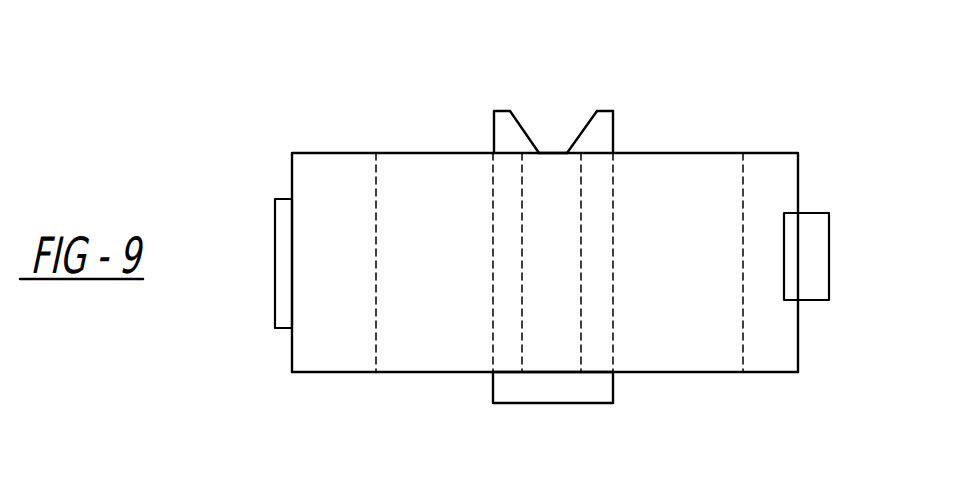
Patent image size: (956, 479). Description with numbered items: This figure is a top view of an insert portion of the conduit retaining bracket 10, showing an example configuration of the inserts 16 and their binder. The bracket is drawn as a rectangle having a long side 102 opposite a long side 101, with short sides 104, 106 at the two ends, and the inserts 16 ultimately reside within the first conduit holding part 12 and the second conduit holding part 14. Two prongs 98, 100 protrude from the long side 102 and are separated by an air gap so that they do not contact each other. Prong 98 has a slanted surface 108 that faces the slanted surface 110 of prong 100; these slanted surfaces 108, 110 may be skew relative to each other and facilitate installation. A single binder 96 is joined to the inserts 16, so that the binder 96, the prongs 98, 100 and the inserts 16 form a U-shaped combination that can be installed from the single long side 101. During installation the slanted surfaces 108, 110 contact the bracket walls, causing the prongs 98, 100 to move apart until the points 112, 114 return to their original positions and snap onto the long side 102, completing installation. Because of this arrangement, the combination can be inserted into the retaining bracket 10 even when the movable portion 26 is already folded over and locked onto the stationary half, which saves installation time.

The retaining bracket 10 is at (226, 148).
The first conduit holding part 12 is at (418, 347).
The second conduit holding part 14 is at (667, 349).
The compressible insert 16 is at (494, 254).
The movable portion 26 is at (323, 245).
The binder 96 is at (613, 143).
The prong 98 is at (494, 132).
The prong 100 is at (613, 121).
The long side 101 is at (455, 372).
The long side 102 is at (335, 153).
The short side 104 is at (292, 347).
The short side 106 is at (798, 338).
The slanted surface 108 is at (517, 122).
The slanted surface 110 is at (590, 119).
The point 112 is at (539, 152).
The point 114 is at (567, 152).